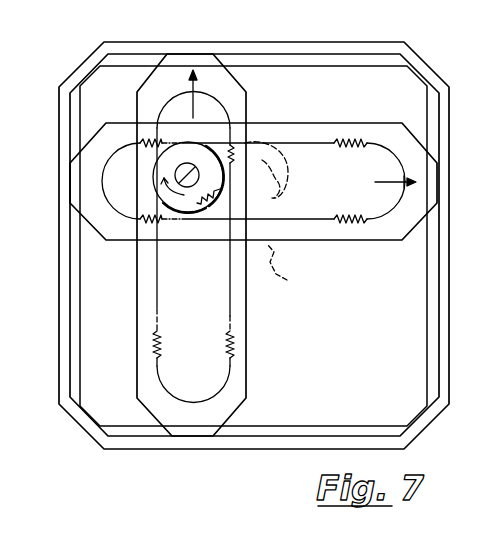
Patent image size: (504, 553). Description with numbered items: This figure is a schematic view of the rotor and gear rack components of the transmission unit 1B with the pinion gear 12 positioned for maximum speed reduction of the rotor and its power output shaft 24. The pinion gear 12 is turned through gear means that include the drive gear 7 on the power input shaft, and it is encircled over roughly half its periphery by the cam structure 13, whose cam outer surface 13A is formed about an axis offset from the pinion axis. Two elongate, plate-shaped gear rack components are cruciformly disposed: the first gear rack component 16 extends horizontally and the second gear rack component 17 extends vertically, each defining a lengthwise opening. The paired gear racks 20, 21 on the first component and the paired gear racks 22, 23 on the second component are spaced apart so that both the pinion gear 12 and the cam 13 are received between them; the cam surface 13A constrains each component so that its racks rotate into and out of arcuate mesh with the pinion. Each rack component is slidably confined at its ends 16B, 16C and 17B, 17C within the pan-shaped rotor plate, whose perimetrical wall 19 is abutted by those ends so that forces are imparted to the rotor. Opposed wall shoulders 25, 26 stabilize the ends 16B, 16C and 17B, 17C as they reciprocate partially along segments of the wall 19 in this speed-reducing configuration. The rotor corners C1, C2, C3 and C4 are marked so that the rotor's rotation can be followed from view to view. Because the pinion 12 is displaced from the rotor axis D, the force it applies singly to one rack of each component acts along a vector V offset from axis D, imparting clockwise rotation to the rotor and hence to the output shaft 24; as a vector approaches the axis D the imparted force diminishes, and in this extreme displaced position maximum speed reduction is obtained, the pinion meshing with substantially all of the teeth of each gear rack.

The puzzle device 1B is at (462, 231).
The drive gear 7 is at (295, 175).
The pinion gear 12 is at (197, 161).
The cam structure 13 is at (214, 216).
The cam outer surface 13A is at (224, 198).
The first gear rack component 16 is at (305, 250).
The end of first gear rack component 16B is at (70, 172).
The end of first gear rack component 16C is at (434, 168).
The second gear rack component 17 is at (257, 308).
The end of second gear rack component 17B is at (198, 53).
The end of second gear rack component 17C is at (197, 436).
The perimetrical wall 19 is at (339, 42).
The gear rack 20 is at (341, 146).
The gear rack 21 is at (343, 218).
The gear rack 22 is at (159, 331).
The gear rack 23 is at (228, 333).
The power output shaft 24 is at (289, 271).
The wall shoulder 25 is at (428, 264).
The wall shoulder 26 is at (287, 62).
The rotor corner C1 is at (88, 44).
The rotor corner C2 is at (427, 62).
The rotor corner C3 is at (436, 419).
The rotor corner C4 is at (82, 437).
The rotor axis D is at (256, 243).
The force vector V is at (195, 100).